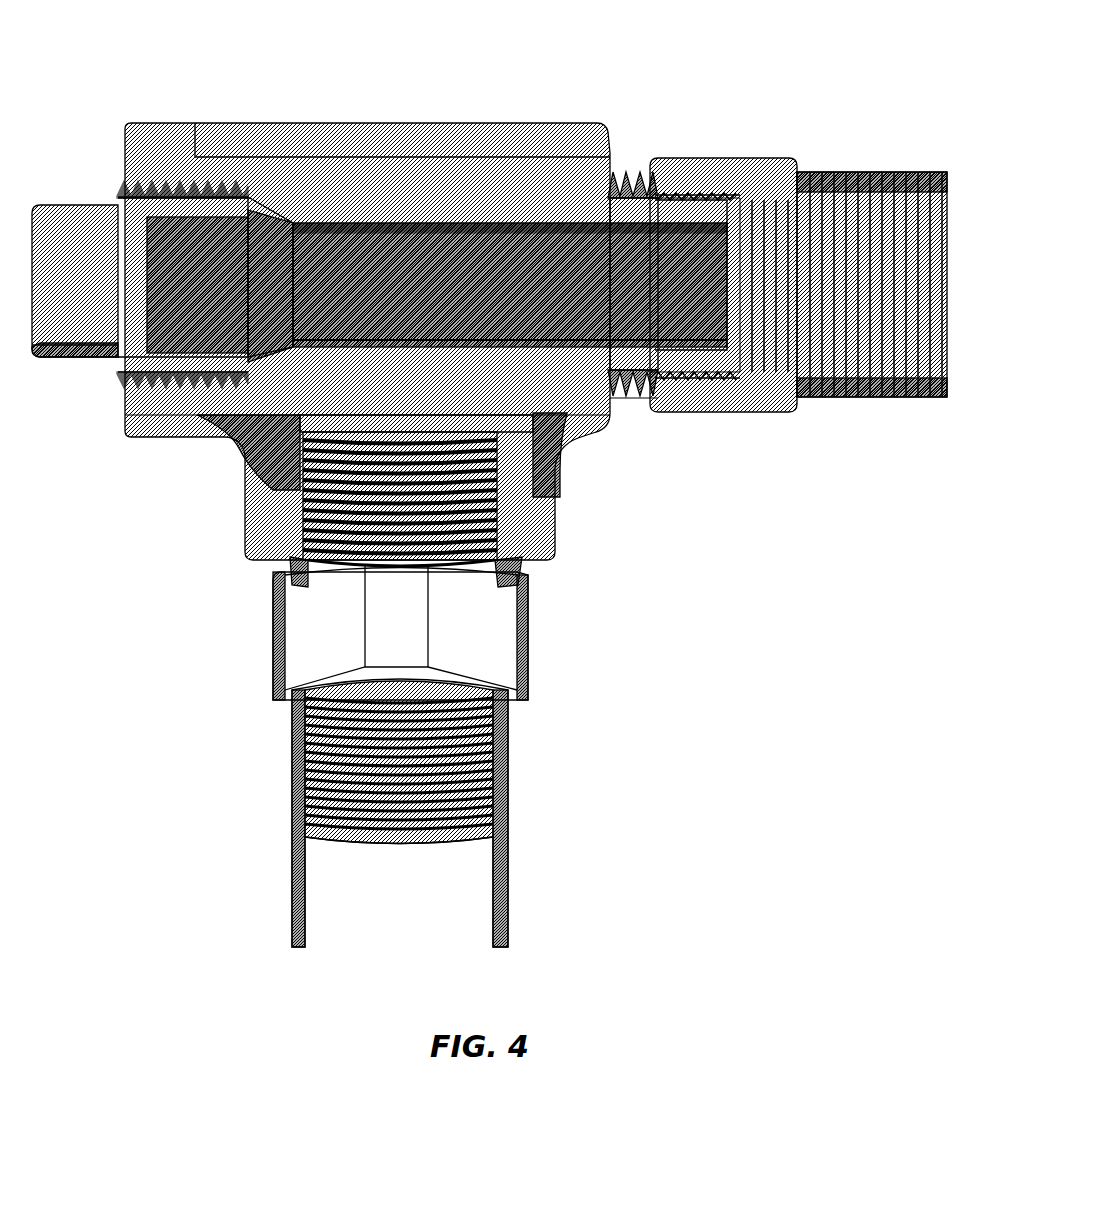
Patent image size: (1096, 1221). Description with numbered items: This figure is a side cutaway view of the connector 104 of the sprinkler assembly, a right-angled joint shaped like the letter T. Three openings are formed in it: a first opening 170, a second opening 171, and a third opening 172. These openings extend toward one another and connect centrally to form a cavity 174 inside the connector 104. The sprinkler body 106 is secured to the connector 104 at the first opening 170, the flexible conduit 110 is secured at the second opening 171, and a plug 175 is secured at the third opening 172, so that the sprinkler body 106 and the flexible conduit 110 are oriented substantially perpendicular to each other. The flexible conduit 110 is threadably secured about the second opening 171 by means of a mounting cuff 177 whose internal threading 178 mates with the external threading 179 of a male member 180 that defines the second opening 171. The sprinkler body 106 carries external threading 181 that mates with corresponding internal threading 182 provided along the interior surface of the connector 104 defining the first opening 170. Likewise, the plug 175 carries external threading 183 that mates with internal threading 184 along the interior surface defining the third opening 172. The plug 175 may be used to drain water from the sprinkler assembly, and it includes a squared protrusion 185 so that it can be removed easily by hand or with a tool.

The connector 104 is at (409, 70).
The sprinkler body 106 is at (500, 890).
The flexible conduit 110 is at (858, 172).
The first opening 170 is at (352, 418).
The second opening 171 is at (708, 260).
The third opening 172 is at (304, 256).
The cavity 174 is at (450, 256).
The plug 175 is at (66, 220).
The mounting cuff 177 is at (774, 158).
The internal threading 178 is at (694, 193).
The external threading 179 is at (643, 178).
The male member 180 is at (650, 399).
The external threading 181 is at (508, 575).
The internal threading 182 is at (500, 512).
The external threading 183 is at (217, 188).
The internal threading 184 is at (150, 190).
The squared protrusion 185 is at (52, 358).